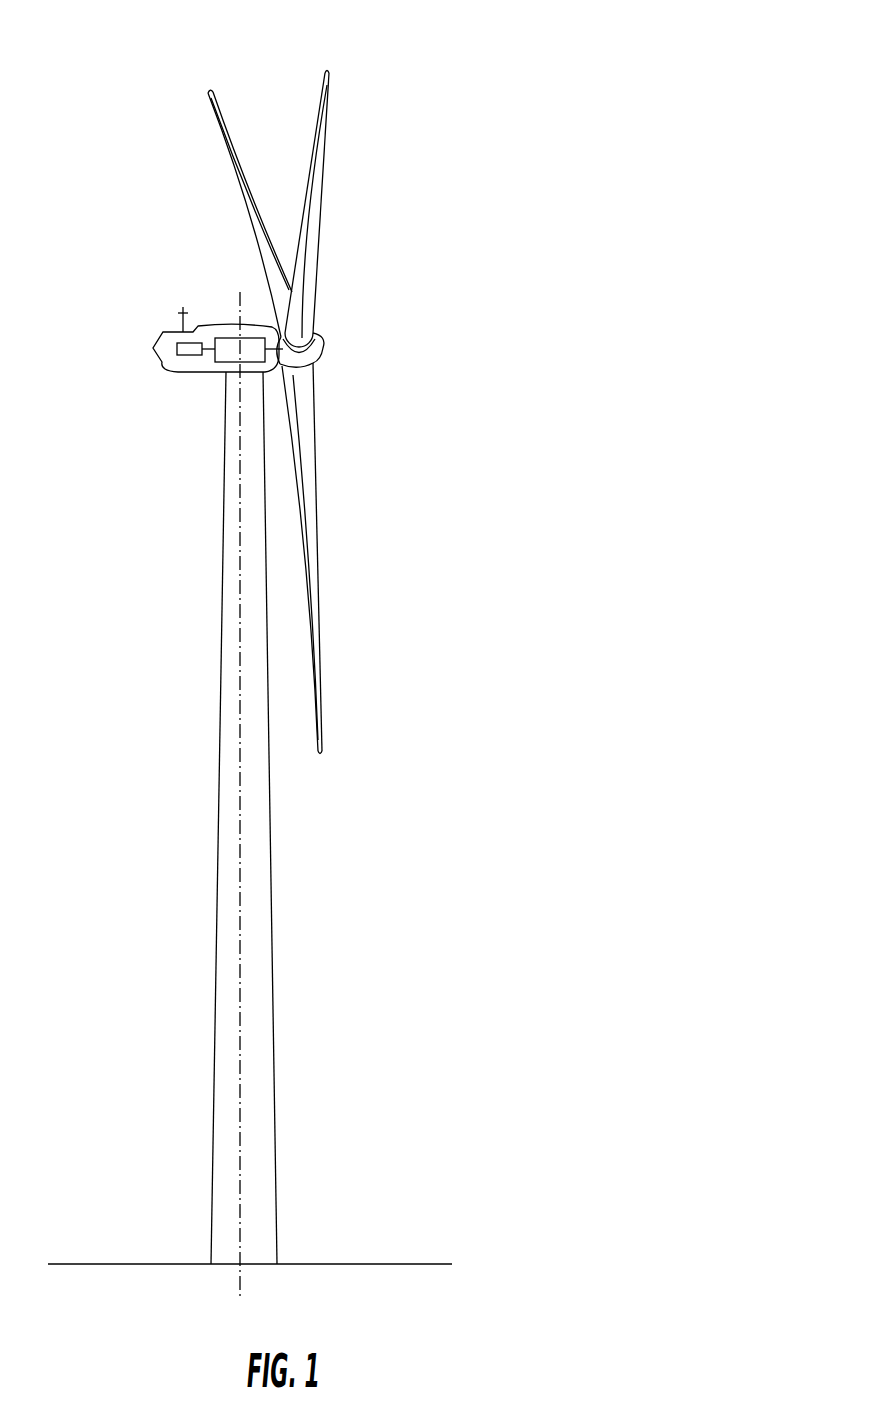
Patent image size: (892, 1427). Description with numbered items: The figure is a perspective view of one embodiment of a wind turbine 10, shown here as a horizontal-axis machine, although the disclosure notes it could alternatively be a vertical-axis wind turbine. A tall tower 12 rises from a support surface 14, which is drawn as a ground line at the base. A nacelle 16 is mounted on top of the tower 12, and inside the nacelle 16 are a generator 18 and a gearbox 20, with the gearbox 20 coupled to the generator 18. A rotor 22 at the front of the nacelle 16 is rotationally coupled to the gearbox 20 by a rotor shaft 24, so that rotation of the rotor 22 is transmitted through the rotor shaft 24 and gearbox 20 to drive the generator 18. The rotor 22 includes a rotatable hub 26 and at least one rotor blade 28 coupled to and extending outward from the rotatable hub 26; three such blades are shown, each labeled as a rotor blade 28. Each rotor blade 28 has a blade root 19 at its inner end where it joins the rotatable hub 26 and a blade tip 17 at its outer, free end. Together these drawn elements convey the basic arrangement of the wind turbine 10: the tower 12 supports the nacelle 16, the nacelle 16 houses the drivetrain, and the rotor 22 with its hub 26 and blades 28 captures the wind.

The wind turbine 10 is at (453, 104).
The tower 12 is at (215, 955).
The support surface 14 is at (130, 1264).
The nacelle 16 is at (175, 373).
The blade tip 17 is at (323, 738).
The generator 18 is at (178, 333).
The blade root 19 is at (313, 383).
The gearbox 20 is at (222, 327).
The rotor 22 is at (329, 327).
The rotor shaft 24 is at (279, 350).
The rotatable hub 26 is at (325, 357).
The rotor blade 28 is at (228, 163).